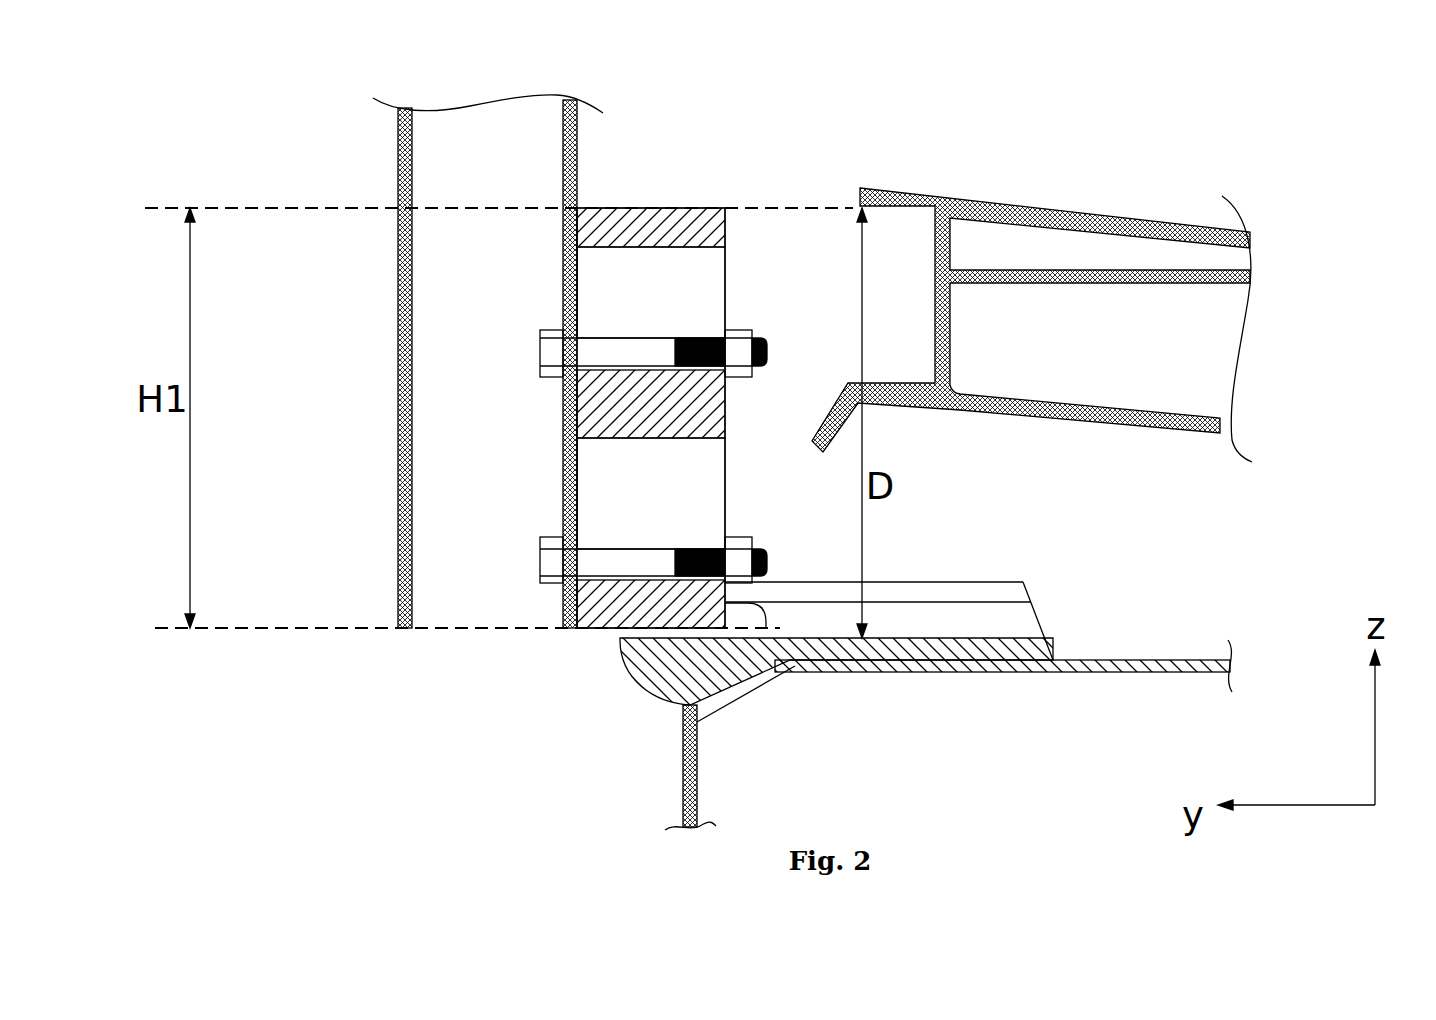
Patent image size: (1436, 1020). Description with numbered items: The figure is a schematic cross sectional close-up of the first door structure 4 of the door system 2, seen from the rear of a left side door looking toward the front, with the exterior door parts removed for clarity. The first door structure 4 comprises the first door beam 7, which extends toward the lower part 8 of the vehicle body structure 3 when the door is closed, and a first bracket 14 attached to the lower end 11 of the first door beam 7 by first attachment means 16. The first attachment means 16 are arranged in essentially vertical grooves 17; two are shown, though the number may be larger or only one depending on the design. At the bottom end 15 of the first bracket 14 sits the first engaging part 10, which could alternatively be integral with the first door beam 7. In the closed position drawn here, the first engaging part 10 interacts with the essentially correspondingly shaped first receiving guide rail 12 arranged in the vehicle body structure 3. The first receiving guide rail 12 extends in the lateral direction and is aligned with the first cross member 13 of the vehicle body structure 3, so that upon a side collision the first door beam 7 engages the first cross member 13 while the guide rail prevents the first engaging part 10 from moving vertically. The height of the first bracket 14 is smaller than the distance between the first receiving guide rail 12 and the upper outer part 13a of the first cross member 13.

The door system 2 is at (308, 140).
The vehicle body structure 3 is at (1388, 192).
The first door structure 4 is at (258, 208).
The first door beam 7 is at (398, 303).
The lower part 8 is at (290, 703).
The first engaging part 10 is at (677, 624).
The lower end 11 is at (398, 605).
The first receiving guide rail 12 is at (812, 623).
The first cross member 13 is at (1127, 428).
The upper outer part 13a is at (880, 204).
The first bracket 14 is at (671, 345).
The bottom end 15 is at (300, 760).
The first attachment means 16 is at (540, 352).
The essentially vertical grooves 17 is at (618, 311).